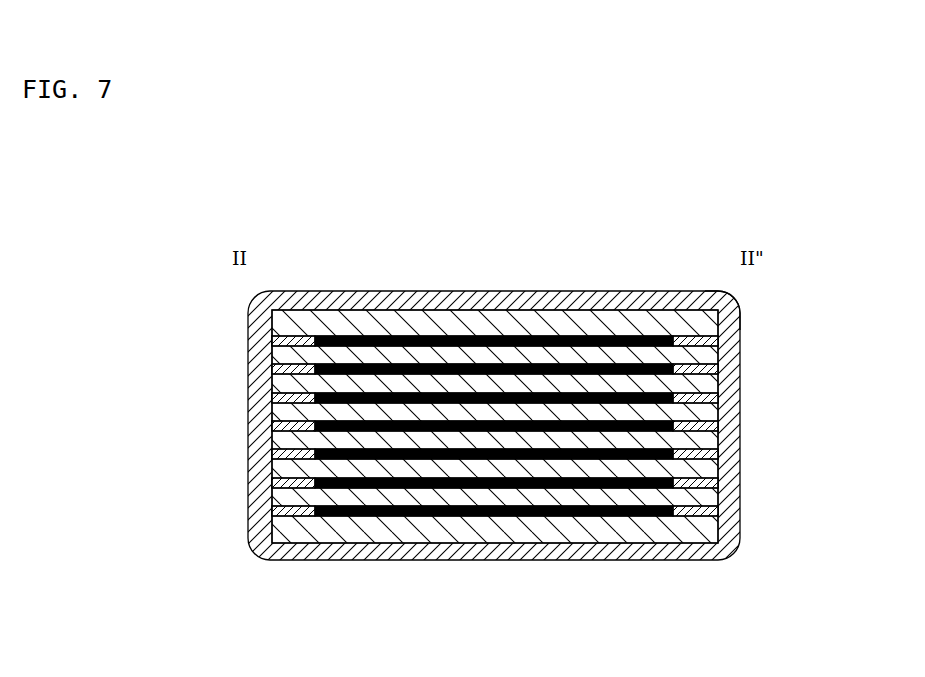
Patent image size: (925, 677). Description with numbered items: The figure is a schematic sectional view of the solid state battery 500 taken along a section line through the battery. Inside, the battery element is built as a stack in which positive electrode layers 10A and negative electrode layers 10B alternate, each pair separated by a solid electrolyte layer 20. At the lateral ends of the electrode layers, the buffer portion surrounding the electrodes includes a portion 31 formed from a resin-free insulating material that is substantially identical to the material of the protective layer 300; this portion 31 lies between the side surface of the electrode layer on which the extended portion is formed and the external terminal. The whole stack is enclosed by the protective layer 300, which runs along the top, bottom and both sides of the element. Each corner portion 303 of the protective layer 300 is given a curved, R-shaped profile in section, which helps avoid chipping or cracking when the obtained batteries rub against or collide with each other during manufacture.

The solid state battery 500 is at (542, 398).
The protective layer 300 is at (477, 300).
The corner portion of protective layer 303 is at (735, 296).
The solid electrolyte layer 20 is at (391, 318).
The portion formed from resin-free insulating material 31 is at (297, 337).
The positive electrode layer 10A is at (578, 425).
The negative electrode layer 10B is at (352, 400).